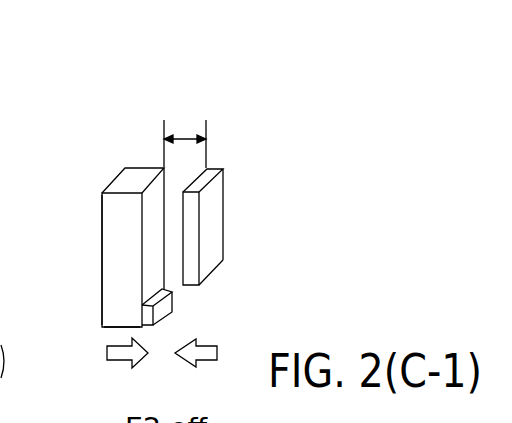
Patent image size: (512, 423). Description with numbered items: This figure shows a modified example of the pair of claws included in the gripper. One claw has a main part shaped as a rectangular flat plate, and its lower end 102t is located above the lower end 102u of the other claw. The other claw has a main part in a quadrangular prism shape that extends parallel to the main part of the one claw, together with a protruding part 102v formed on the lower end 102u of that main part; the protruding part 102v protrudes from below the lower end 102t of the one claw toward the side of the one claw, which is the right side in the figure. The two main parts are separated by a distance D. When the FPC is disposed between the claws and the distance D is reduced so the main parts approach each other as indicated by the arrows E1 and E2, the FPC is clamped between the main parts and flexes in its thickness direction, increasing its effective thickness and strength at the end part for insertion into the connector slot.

The lower end 102t is at (215, 272).
The protruding part 102v is at (170, 303).
The lower end 102u is at (108, 330).
The distance D is at (186, 137).
The arrow E1 is at (198, 357).
The arrow E2 is at (117, 357).